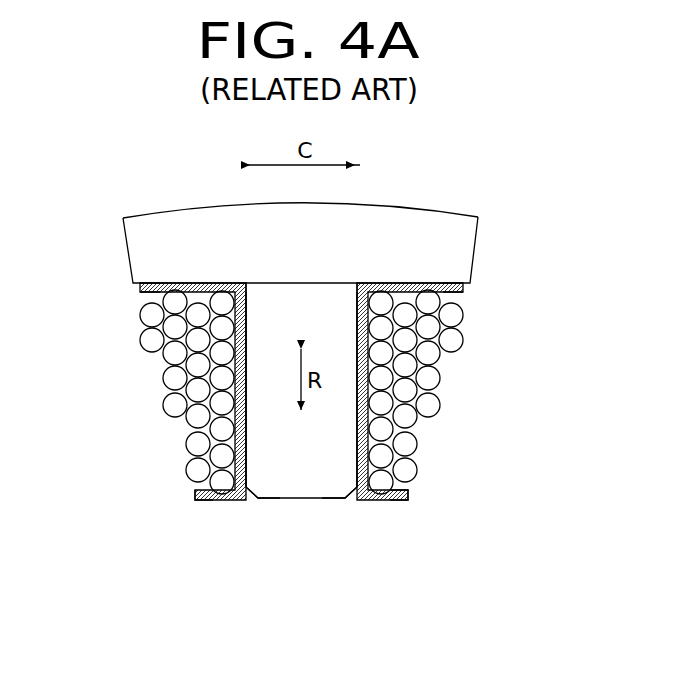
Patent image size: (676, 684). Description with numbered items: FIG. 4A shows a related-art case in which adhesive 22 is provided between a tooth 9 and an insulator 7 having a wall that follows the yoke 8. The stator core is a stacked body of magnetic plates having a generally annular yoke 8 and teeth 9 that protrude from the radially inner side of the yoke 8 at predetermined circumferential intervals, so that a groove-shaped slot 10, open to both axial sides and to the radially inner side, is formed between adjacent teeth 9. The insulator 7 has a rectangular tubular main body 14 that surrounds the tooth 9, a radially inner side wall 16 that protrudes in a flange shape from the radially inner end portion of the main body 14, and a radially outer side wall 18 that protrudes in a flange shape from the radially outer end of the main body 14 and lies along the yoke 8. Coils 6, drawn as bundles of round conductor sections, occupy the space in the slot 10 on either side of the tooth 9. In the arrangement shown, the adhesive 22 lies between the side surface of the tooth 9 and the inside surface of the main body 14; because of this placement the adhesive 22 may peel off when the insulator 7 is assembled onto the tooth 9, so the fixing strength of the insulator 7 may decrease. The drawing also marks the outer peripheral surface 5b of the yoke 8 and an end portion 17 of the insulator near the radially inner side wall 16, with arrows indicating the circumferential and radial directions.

The outer peripheral surface of yoke 5b is at (395, 205).
The coils 6 is at (172, 378).
The insulator 7 is at (195, 498).
The yoke 8 is at (200, 240).
The tooth 9 is at (298, 499).
The slot 10 is at (146, 467).
The main body 14 is at (273, 500).
The radially inner side wall 16 is at (211, 502).
The folded end portion of insulating sheet 17 is at (408, 499).
The radially outer side wall 18 is at (138, 292).
The adhesive 22 is at (247, 338).